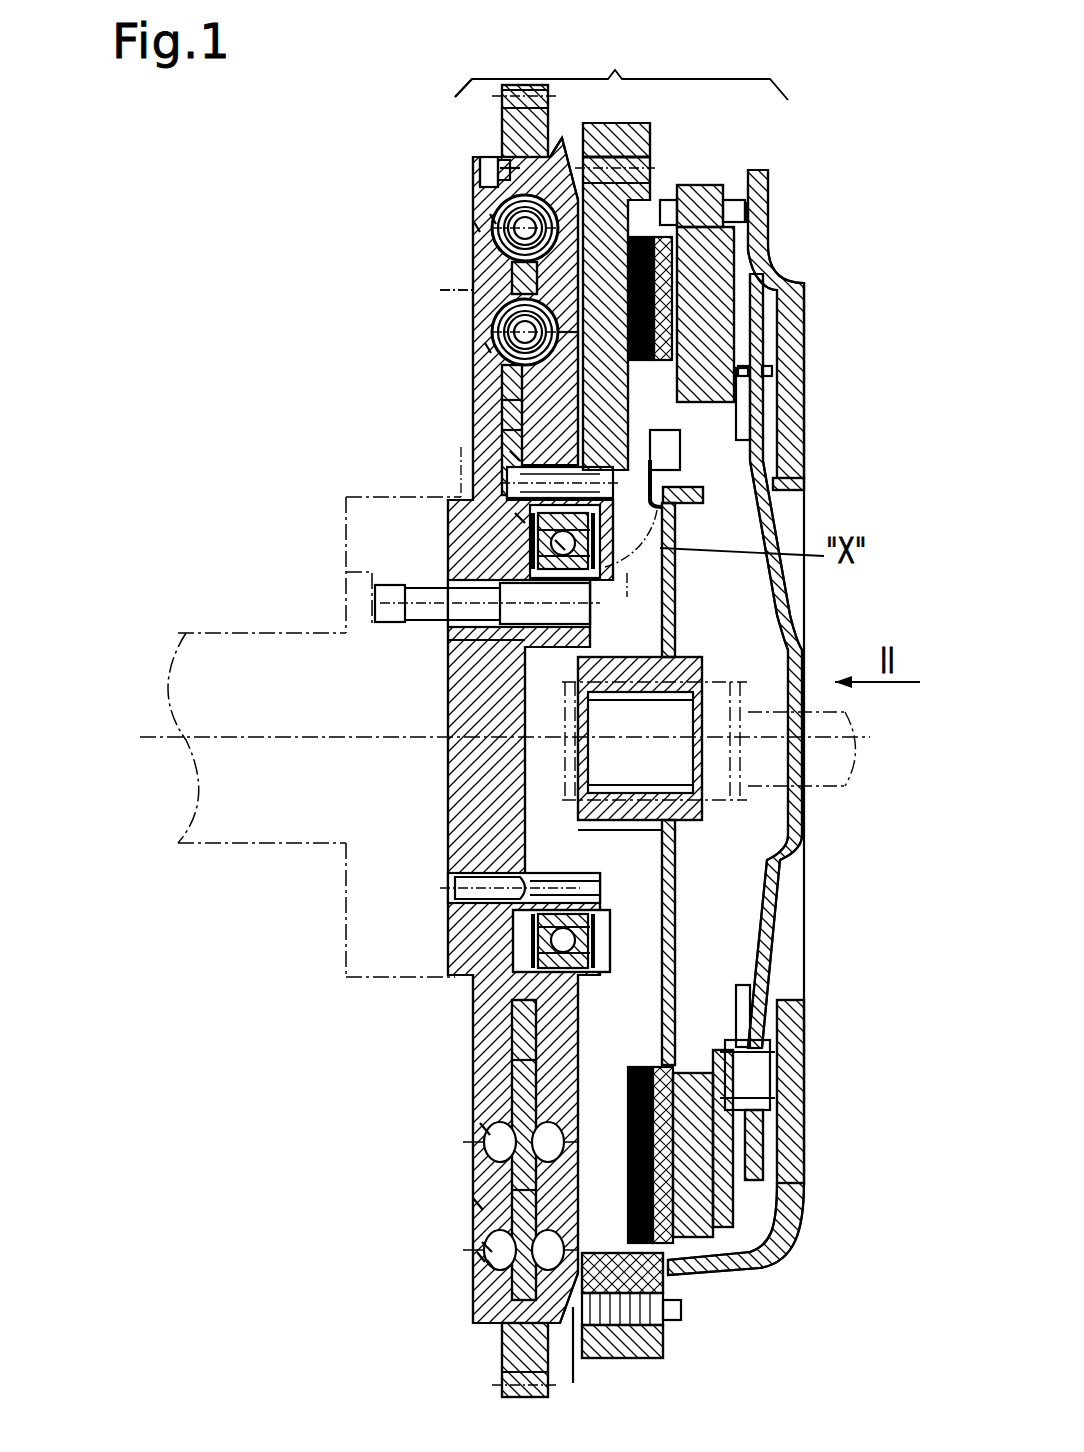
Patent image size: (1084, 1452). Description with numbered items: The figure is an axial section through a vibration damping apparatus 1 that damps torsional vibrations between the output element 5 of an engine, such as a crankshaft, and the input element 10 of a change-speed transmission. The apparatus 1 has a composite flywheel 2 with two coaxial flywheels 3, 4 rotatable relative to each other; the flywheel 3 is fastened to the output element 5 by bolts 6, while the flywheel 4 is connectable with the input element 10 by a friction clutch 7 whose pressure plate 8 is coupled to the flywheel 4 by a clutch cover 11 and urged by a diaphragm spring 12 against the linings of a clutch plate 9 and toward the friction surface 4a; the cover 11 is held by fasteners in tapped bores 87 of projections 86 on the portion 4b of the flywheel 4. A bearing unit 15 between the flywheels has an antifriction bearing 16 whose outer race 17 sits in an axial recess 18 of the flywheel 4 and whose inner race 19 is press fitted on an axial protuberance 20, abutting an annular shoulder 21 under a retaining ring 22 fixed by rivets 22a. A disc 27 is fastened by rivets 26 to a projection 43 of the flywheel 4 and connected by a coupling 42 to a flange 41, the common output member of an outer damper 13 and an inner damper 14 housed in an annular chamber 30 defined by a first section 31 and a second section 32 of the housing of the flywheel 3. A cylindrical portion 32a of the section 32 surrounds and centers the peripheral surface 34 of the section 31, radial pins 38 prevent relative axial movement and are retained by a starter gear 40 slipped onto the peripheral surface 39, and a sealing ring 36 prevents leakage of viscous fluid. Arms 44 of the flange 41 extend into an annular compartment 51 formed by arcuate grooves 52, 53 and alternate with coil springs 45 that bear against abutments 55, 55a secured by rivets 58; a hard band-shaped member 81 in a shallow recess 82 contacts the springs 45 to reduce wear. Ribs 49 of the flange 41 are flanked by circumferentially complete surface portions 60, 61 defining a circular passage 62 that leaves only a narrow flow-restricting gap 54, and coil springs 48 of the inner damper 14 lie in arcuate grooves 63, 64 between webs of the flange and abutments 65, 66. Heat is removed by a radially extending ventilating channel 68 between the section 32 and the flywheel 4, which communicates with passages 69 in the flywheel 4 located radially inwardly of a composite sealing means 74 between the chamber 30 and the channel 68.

The vibration damping apparatus 1 is at (788, 112).
The composite flywheel 2 is at (621, 62).
The flywheel 3 is at (540, 942).
The flywheel 4 is at (627, 143).
The friction surface 4a is at (734, 270).
The portion of the flywheel 4b is at (620, 215).
The output element 5 is at (225, 793).
The bolts 6 is at (450, 601).
The friction clutch 7 is at (778, 169).
The pressure plate 8 is at (777, 1087).
The clutch plate 9 is at (705, 957).
The input element 10 is at (830, 769).
The clutch cover 11 is at (690, 1122).
The diaphragm spring 12 is at (779, 933).
The outer damper 13 is at (525, 226).
The inner damper 14 is at (497, 336).
The bearing unit 15 is at (520, 595).
The antifriction bearing 16 is at (452, 604).
The outer race 17 is at (676, 525).
The axial recess 18 is at (690, 495).
The inner race 19 is at (605, 578).
The axial protuberance 20 is at (470, 871).
The annular shoulder 21 is at (565, 914).
The retaining ring 22 is at (605, 858).
The rivets 22a is at (640, 897).
The rivets 26 is at (520, 518).
The disc 27 is at (560, 545).
The annular chamber 30 is at (505, 410).
The first section 31 is at (500, 388).
The second section 32 is at (672, 312).
The cylindrical portion 32a is at (473, 162).
The cylindrical peripheral surface 34 is at (490, 172).
The sealing ring 36 is at (560, 165).
The pins 38 is at (475, 153).
The cylindrical peripheral surface 39 is at (500, 1314).
The starter gear 40 is at (505, 113).
The flange 41 is at (505, 433).
The coupling 42 is at (515, 456).
The projection 43 is at (545, 982).
The arms 44 is at (490, 1265).
The coil springs 45 is at (497, 246).
The coil springs 48 is at (488, 330).
The ribs 49 is at (435, 292).
The annular compartment 51 is at (492, 219).
The arcuate groove 52 is at (478, 227).
The arcuate groove 53 is at (729, 249).
The gap 54 is at (700, 287).
The abutment 55 is at (488, 1247).
The abutment 55a is at (655, 1195).
The rivets 58 is at (480, 1257).
The circumferentially complete portion 60 is at (478, 1204).
The circumferentially complete portion 61 is at (789, 1149).
The circular passage 62 is at (475, 1193).
The arcuate groove 63 is at (488, 348).
The arcuate groove 64 is at (772, 366).
The abutment 65 is at (485, 1129).
The abutment 66 is at (700, 1103).
The ventilating channel 68 is at (573, 1383).
The passages 69 is at (700, 1029).
The composite sealing means 74 is at (510, 1072).
The band-shaped member 81 is at (525, 1288).
The shallow recess 82 is at (497, 1311).
The projections 86 is at (640, 1318).
The tapped bores 87 is at (660, 1298).